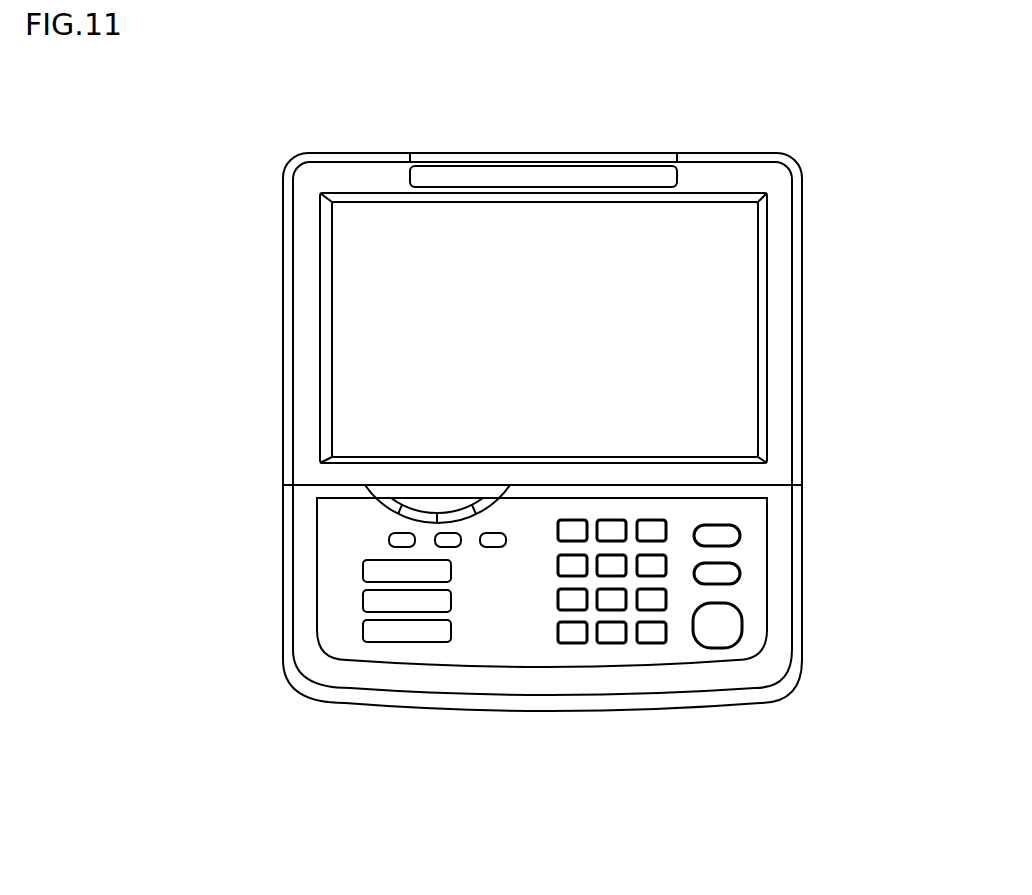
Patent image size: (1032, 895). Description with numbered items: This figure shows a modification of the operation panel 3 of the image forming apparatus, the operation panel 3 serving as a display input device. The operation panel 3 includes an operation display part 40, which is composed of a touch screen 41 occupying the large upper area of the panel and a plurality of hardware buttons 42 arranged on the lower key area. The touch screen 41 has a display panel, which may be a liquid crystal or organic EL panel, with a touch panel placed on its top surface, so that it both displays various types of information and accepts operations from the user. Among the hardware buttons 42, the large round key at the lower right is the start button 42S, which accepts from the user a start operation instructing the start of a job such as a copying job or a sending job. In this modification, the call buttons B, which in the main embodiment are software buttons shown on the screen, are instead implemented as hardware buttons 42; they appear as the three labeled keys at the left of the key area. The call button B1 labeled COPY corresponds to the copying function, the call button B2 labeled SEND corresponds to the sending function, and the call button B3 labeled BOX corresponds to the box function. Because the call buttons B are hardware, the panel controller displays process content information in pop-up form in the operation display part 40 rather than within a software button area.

The operation panel 3 is at (286, 152).
The operation display part 40 is at (572, 633).
The touch screen 41 is at (398, 362).
The hardware buttons 42 is at (728, 538).
The start button 42S is at (714, 638).
The call buttons B is at (294, 599).
The call button B1 is at (363, 571).
The call button B2 is at (363, 601).
The call button B3 is at (363, 632).